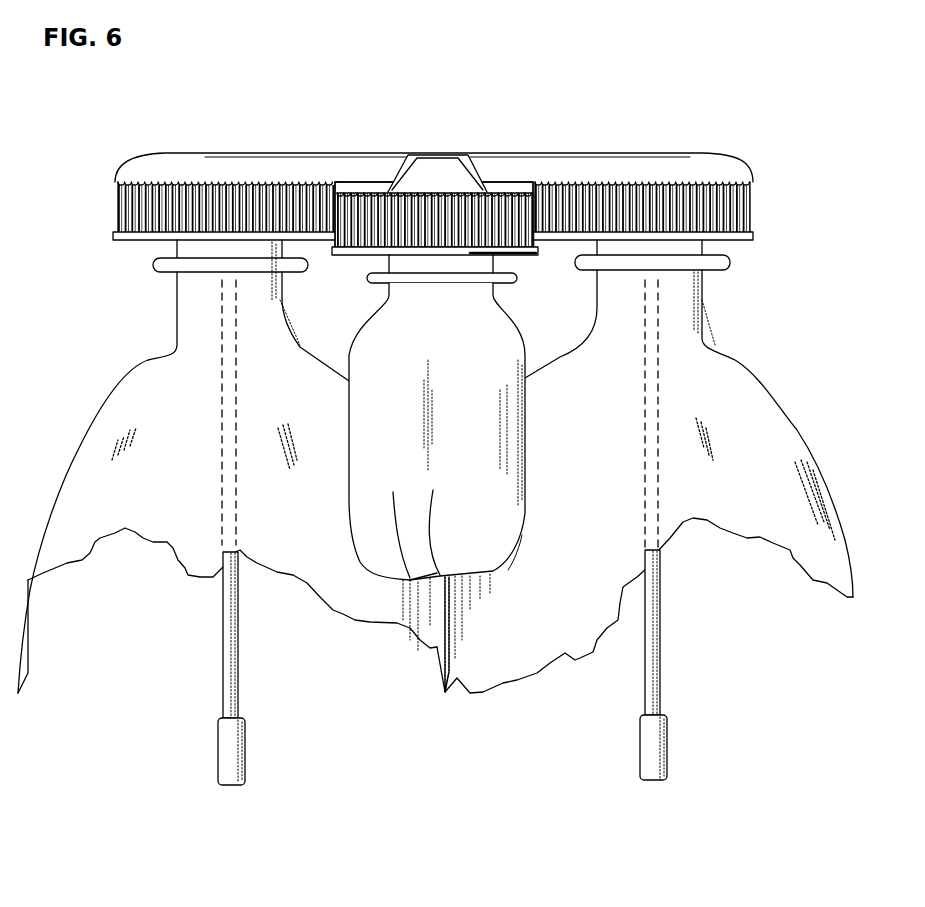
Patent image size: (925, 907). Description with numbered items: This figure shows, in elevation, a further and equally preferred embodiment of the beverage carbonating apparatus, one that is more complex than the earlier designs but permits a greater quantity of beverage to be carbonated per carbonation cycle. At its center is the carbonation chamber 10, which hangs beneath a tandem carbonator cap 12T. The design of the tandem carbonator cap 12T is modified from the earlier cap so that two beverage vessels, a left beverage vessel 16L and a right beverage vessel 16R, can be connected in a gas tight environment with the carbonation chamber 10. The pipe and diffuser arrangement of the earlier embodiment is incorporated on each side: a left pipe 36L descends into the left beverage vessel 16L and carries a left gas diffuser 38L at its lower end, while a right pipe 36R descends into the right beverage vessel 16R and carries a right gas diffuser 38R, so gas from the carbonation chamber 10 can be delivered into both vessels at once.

The tandem carbonator cap 12T is at (538, 147).
The beverage vessel 16L is at (138, 355).
The beverage vessel 16R is at (725, 338).
The carbonation chamber 10 is at (390, 537).
The pipe 36L is at (215, 660).
The pipe 36R is at (665, 650).
The gas diffuser 38L is at (210, 747).
The gas diffuser 38R is at (670, 748).